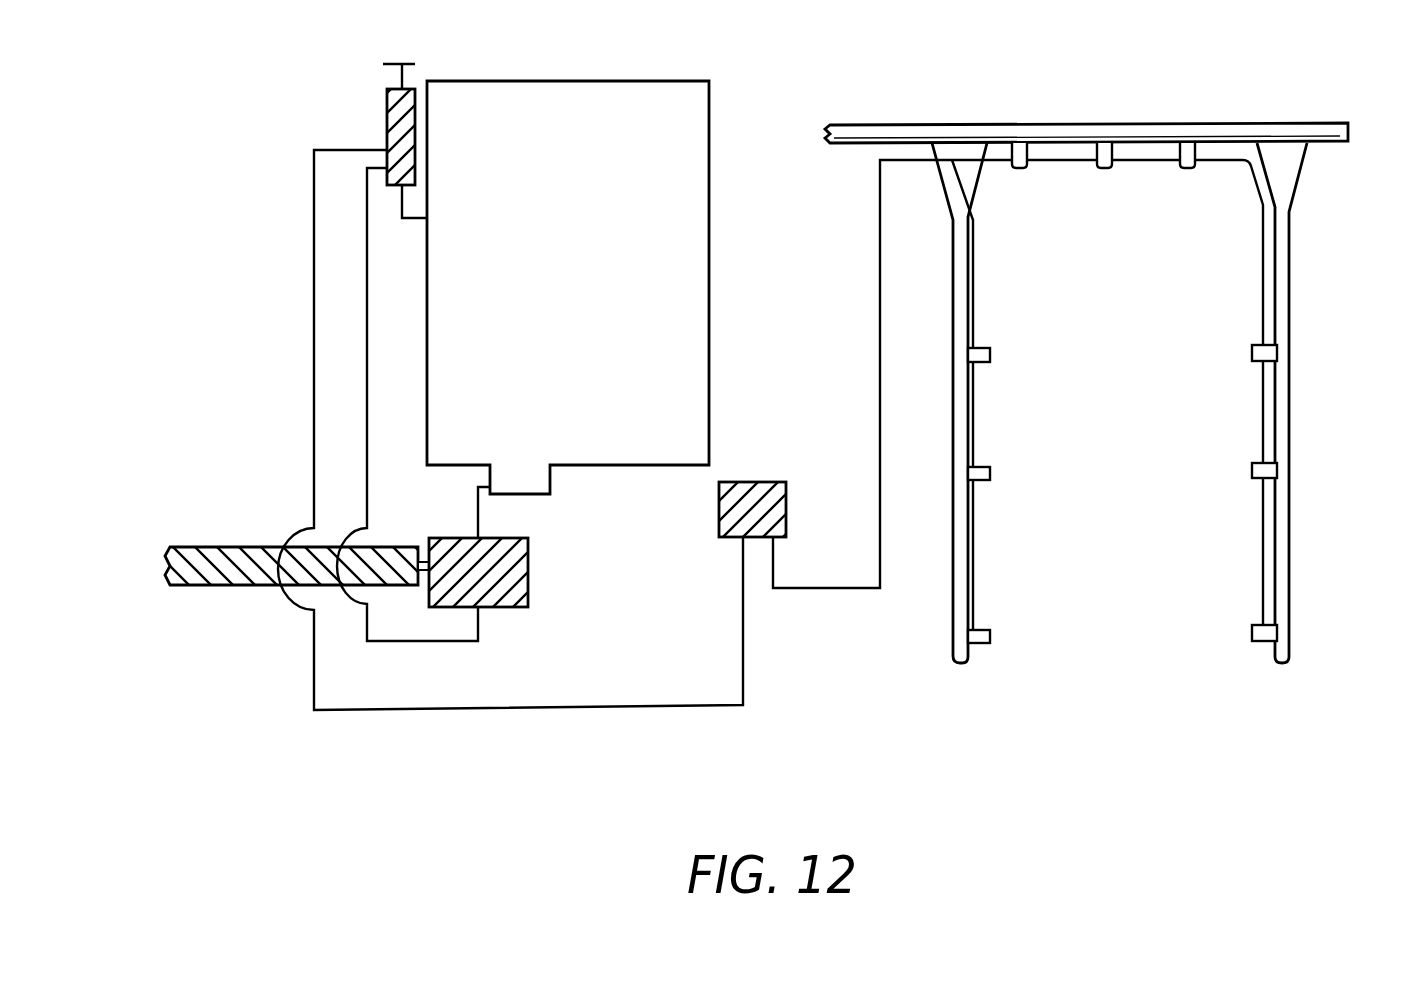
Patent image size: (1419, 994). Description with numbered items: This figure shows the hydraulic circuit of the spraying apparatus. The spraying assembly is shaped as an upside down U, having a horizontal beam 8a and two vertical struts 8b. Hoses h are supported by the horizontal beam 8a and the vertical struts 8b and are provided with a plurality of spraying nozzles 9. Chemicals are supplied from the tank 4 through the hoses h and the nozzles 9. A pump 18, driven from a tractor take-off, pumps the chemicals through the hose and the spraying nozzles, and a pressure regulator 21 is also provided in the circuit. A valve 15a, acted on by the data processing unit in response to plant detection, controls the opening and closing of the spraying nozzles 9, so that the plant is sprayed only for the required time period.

The tank 4 is at (582, 105).
The pressure regulator 21 is at (387, 121).
The pump 18 is at (152, 570).
The valve 15a is at (760, 495).
The horizontal beam 8a is at (1240, 136).
The vertical struts 8b is at (955, 525).
The spraying nozzles 9 is at (992, 358).
The hoses h is at (882, 328).